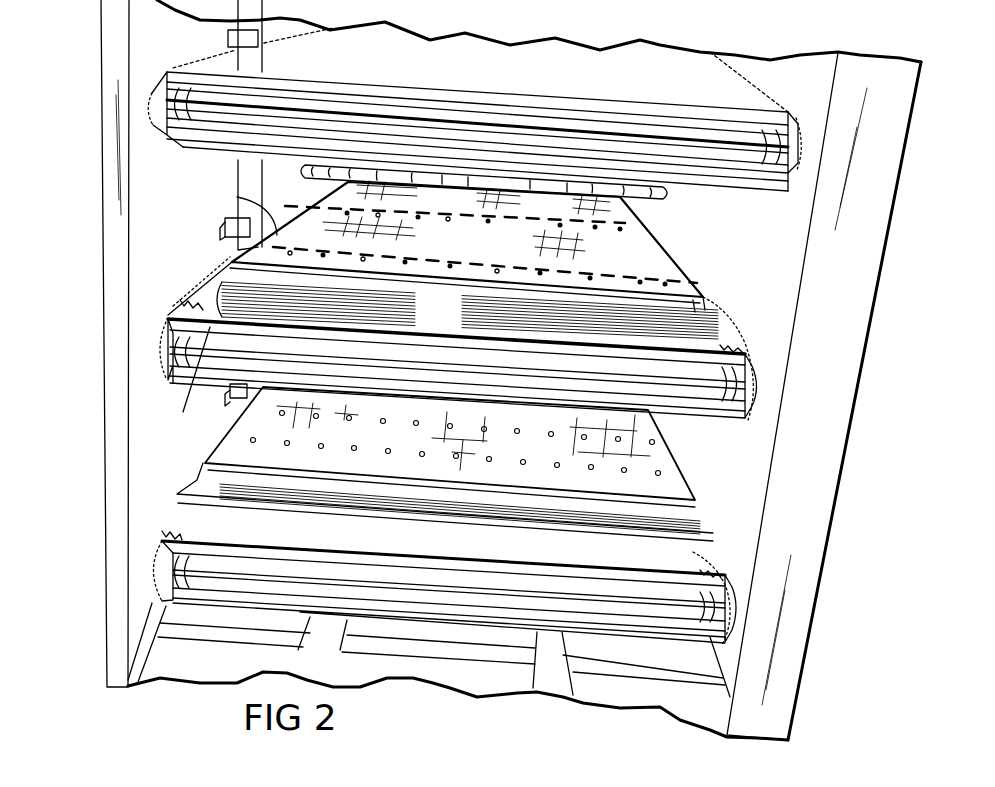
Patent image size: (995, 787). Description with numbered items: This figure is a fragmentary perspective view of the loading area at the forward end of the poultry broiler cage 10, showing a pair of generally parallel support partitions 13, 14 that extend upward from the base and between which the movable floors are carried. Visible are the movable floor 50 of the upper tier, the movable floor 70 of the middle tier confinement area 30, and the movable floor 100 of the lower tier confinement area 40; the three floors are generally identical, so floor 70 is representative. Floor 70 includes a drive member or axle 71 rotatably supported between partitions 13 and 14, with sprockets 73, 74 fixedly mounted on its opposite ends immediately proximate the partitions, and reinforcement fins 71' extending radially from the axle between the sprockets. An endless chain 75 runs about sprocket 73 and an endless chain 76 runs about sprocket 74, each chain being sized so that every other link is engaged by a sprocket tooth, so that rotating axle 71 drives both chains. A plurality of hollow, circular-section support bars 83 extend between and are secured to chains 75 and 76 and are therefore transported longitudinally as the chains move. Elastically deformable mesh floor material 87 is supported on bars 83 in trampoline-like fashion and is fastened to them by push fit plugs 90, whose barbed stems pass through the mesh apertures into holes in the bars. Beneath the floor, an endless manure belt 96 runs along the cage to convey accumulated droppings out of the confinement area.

The poultry broiler cage 10 is at (741, 45).
The support partition 13 is at (113, 167).
The support partition 14 is at (870, 207).
The middle tier confinement area 30 is at (768, 245).
The lower tier confinement area 40 is at (731, 480).
The movable floor 50 is at (180, 62).
The movable floor 70 is at (163, 316).
The drive member or axle 71 is at (442, 402).
The reinforcement fins 71' is at (187, 390).
The sprocket 73 is at (165, 335).
The sprocket 74 is at (743, 375).
The chain 75 is at (215, 277).
The chain 76 is at (725, 325).
The support bars 83 is at (345, 200).
The floor material 87 is at (502, 249).
The push fit plugs 90 is at (552, 262).
The manure belt 96 is at (454, 322).
The movable floor 100 is at (153, 517).